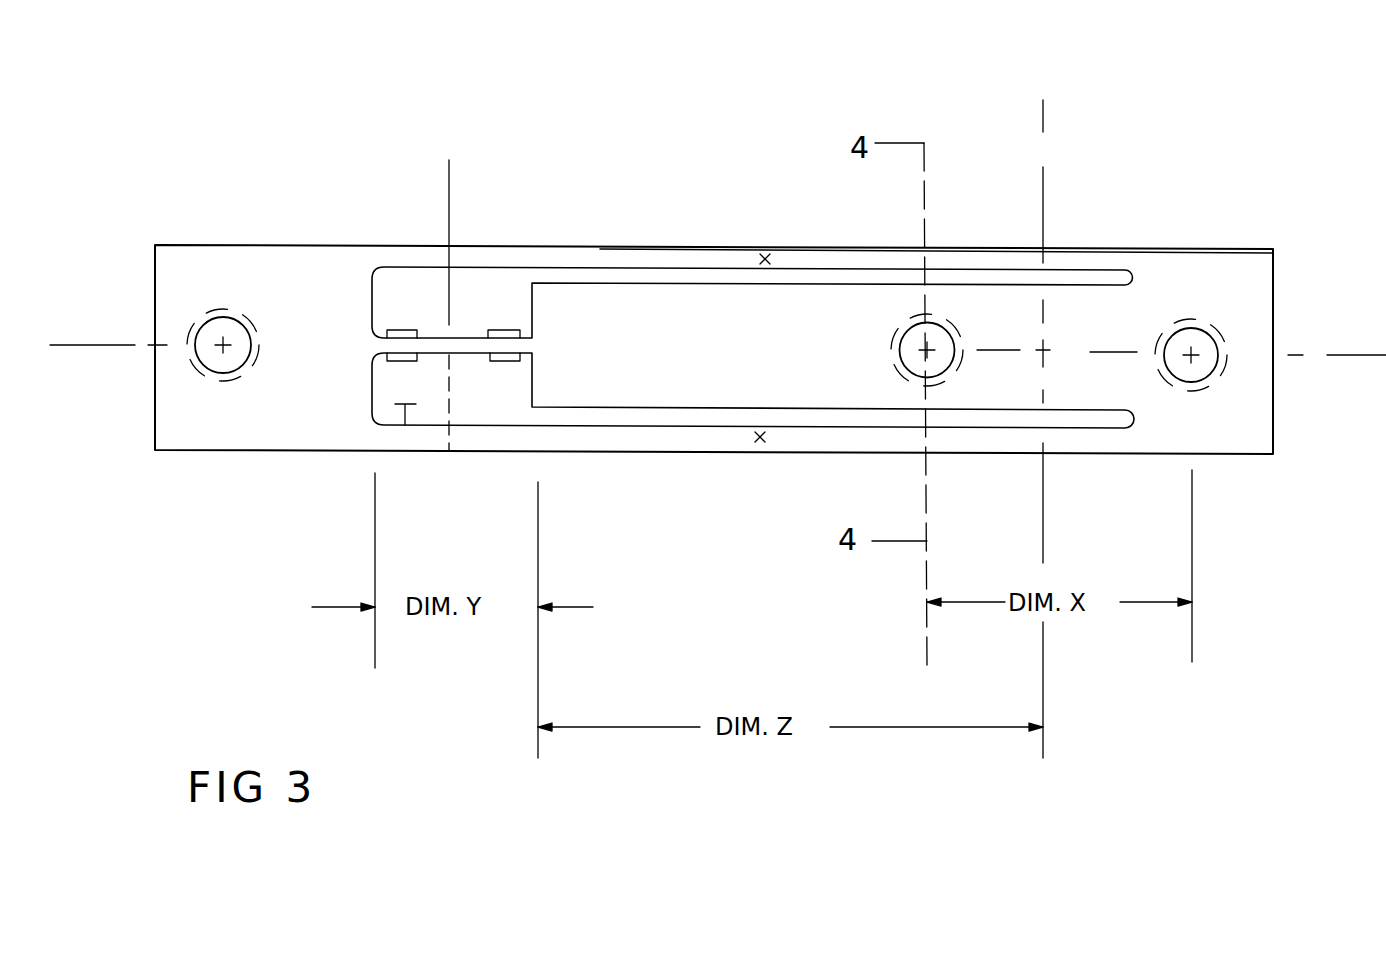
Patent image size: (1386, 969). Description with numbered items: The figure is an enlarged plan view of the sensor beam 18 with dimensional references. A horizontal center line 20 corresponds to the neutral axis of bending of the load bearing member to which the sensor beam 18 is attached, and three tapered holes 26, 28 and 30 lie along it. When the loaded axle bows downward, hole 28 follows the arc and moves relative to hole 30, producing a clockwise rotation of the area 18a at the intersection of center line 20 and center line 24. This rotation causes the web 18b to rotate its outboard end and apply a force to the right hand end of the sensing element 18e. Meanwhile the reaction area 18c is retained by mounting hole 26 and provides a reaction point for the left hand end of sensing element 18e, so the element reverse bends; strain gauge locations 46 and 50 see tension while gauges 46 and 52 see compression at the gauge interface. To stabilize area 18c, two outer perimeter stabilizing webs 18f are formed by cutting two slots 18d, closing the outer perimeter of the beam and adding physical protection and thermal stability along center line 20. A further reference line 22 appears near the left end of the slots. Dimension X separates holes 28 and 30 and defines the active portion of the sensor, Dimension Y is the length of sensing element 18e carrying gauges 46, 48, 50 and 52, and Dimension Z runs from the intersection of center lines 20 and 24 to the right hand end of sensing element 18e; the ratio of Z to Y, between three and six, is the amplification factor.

The sensor beam 18 is at (601, 236).
The area at the intersection of center lines 18a is at (1054, 351).
The web 18b is at (706, 347).
The reaction area 18c is at (302, 350).
The slots 18d is at (655, 272).
The sensing element 18e is at (456, 338).
The outer perimeter stabilizing webs 18f is at (778, 258).
The horizontal center line 20 is at (113, 345).
The reference line 22 is at (452, 165).
The center line 24 is at (1052, 150).
The mounting hole 26 is at (238, 320).
The hole 28 is at (930, 322).
The hole 30 is at (1195, 327).
The strain gauge 46 is at (403, 361).
The strain gauge 48 is at (499, 330).
The strain gauge 50 is at (402, 330).
The strain gauge 52 is at (499, 361).